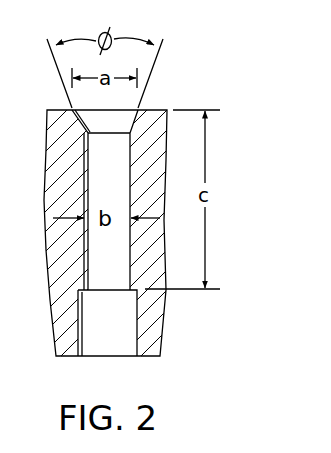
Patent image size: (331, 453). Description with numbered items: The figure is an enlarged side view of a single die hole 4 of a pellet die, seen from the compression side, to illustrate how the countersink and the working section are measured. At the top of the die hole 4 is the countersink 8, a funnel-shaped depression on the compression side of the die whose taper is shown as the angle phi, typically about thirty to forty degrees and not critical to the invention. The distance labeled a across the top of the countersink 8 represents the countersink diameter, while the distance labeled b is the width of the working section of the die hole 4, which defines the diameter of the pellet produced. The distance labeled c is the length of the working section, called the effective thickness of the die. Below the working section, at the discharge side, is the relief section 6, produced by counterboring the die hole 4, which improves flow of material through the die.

The die hole 4 is at (83, 177).
The relief section 6 is at (137, 323).
The countersink 8 is at (79, 118).